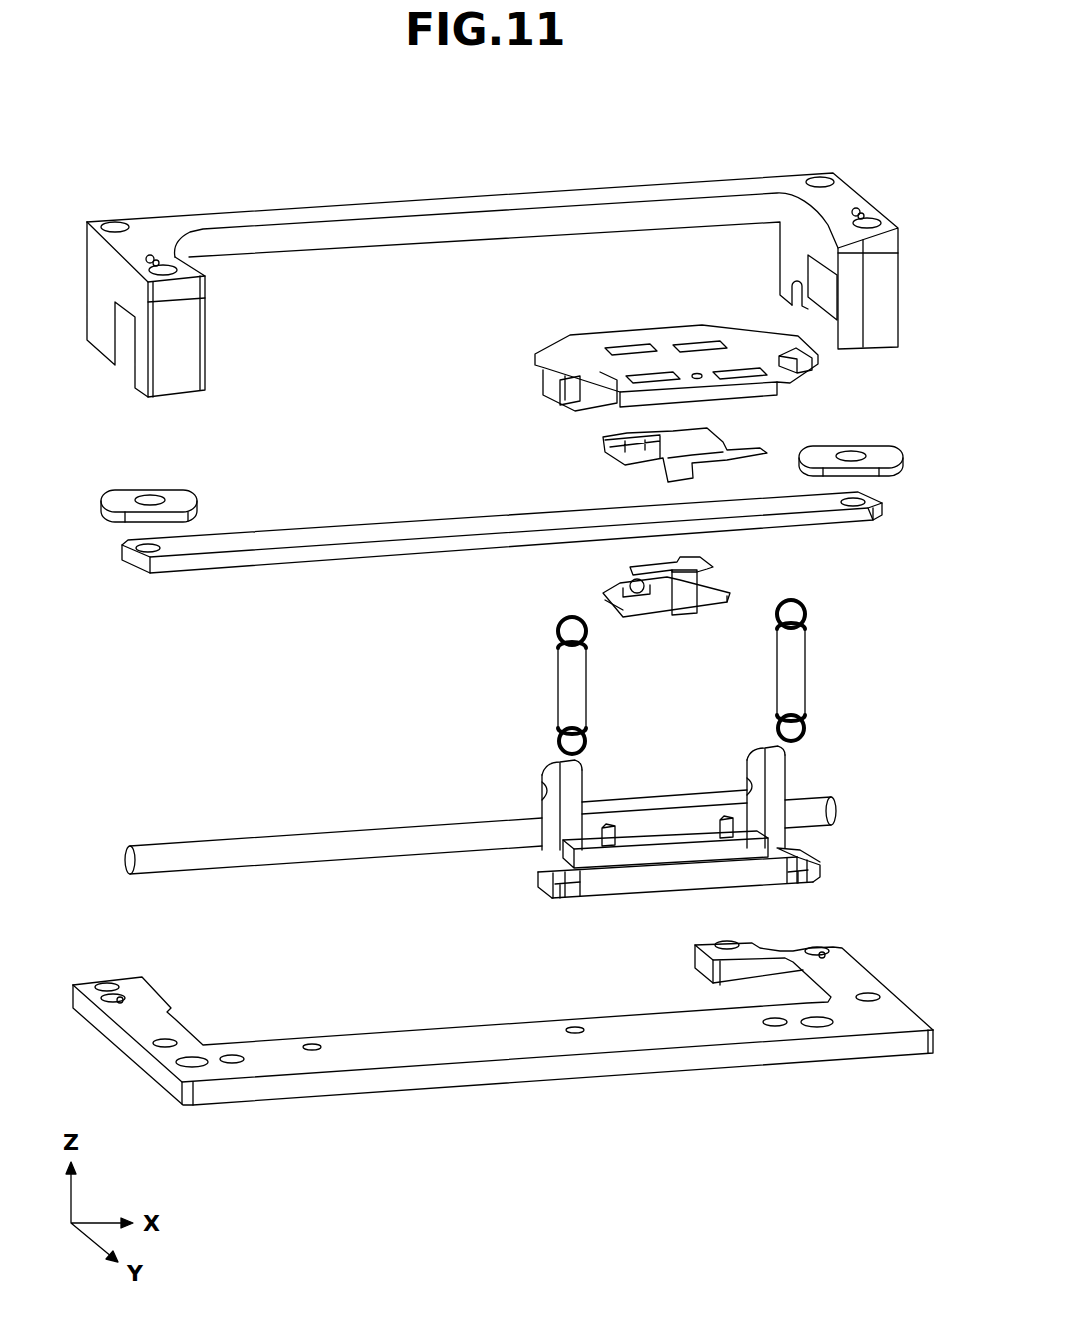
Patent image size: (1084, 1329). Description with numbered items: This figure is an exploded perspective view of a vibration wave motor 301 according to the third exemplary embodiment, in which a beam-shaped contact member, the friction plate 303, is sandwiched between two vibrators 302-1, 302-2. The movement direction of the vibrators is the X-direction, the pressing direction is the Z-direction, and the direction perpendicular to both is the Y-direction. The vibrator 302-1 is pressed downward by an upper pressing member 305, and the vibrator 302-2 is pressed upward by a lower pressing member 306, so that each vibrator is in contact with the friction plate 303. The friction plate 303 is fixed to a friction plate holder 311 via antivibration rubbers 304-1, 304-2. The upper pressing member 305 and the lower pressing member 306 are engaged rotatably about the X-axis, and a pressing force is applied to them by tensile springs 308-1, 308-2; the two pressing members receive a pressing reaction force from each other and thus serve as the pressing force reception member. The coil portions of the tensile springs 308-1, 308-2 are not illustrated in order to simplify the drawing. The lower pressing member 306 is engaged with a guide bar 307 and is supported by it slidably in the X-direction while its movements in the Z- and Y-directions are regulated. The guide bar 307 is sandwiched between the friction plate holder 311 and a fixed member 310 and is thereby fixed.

The vibration wave motor 301 is at (864, 76).
The friction plate holder 311 is at (568, 193).
The upper pressing member 305 is at (568, 348).
The vibrator 302-1 is at (613, 436).
The vibrator 302-2 is at (730, 593).
The antivibration rubber 304-1 is at (880, 455).
The antivibration rubber 304-2 is at (118, 498).
The friction plate 303 is at (288, 560).
The tensile spring 308-1 is at (797, 677).
The tensile spring 308-2 is at (567, 689).
The guide bar 307 is at (255, 848).
The lower pressing member 306 is at (803, 858).
The fixed member 310 is at (720, 1063).